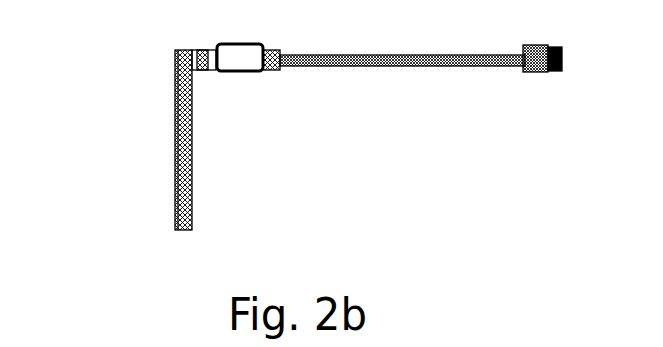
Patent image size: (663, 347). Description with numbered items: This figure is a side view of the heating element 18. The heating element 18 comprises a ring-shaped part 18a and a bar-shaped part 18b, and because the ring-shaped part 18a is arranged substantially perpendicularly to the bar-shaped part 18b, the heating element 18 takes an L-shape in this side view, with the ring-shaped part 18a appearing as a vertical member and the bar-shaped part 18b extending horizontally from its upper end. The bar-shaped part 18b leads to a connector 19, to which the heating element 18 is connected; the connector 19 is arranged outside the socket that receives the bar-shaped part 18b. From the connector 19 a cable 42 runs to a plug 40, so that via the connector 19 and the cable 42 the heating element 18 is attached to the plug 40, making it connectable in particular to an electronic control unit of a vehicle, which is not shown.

The heating element 18 is at (165, 118).
The ring-shaped part 18a is at (181, 171).
The bar-shaped part 18b is at (198, 62).
The connector 19 is at (247, 66).
The cable 42 is at (405, 58).
The plug 40 is at (550, 72).